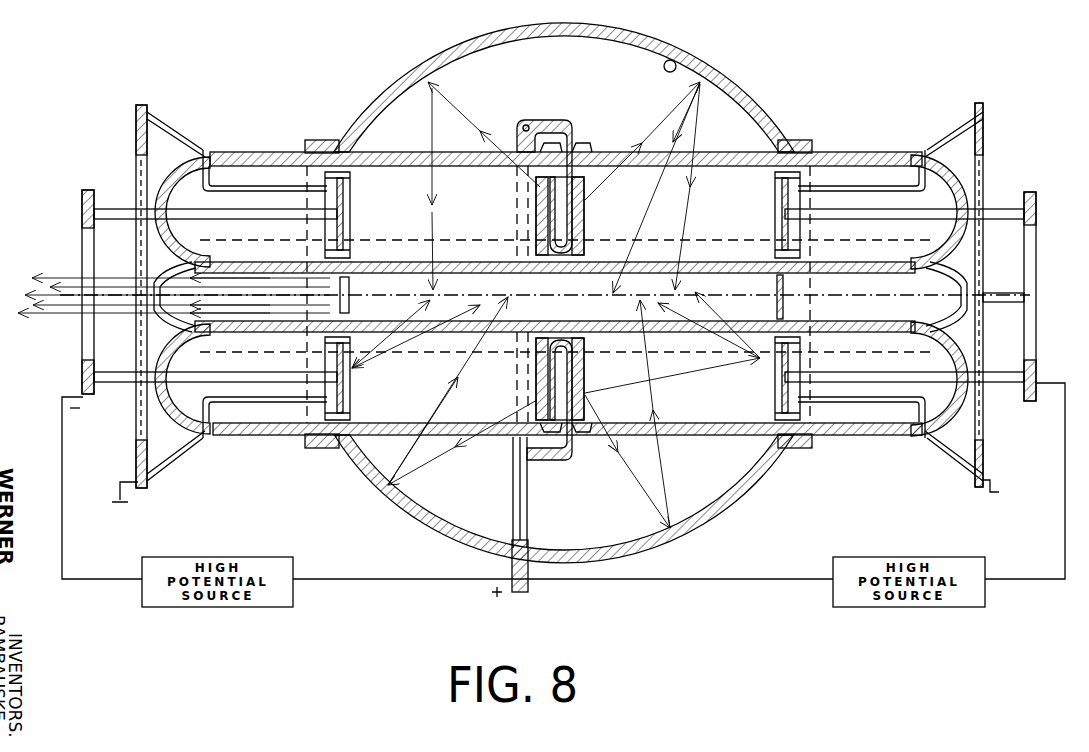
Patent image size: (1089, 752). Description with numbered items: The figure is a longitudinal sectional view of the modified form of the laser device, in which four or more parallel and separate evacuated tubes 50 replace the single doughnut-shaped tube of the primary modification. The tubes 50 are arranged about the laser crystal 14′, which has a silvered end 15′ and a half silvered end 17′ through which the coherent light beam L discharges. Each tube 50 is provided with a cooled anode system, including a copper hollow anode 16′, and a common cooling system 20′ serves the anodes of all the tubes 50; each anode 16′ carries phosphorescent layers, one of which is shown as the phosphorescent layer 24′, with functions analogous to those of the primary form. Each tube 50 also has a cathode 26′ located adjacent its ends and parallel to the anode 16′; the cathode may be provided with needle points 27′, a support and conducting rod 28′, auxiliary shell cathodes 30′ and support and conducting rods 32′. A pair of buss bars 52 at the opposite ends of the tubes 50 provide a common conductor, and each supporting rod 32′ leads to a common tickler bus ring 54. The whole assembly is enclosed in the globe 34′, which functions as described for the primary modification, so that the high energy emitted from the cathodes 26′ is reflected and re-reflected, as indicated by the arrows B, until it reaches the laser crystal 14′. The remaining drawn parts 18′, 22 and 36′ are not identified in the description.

The laser crystal 14′ is at (592, 306).
The silvered end 15′ is at (786, 294).
The copper hollow anode 16′ is at (571, 372).
The half silvered end 17′ is at (349, 300).
The upper electrode 18′ is at (568, 219).
The common cooling system 20′ is at (530, 590).
The electrode supply tube 22 is at (579, 398).
The phosphorescent layer 24′ is at (587, 346).
The cathode 26′ is at (777, 212).
The needle points 27′ is at (776, 372).
The support and conducting rod 28′ is at (1004, 386).
The auxiliary shell cathodes 30′ is at (776, 418).
The support and conducting rods 32′ is at (856, 436).
The globe 34′ is at (728, 514).
The upper mirror 36′ is at (671, 60).
The evacuated tubes 50 is at (886, 151).
The buss bars 52 is at (1037, 214).
The common tickler bus ring 54 is at (986, 458).
The arrows B is at (597, 193).
The coherent light beam L is at (68, 290).